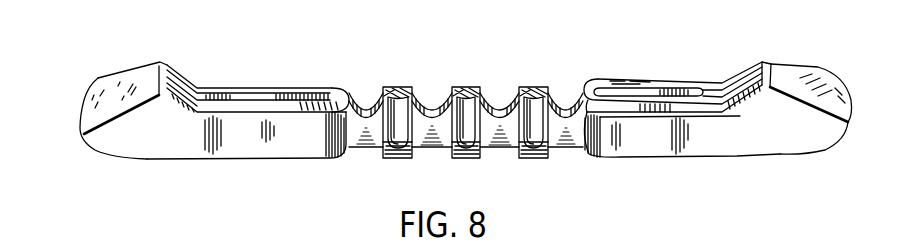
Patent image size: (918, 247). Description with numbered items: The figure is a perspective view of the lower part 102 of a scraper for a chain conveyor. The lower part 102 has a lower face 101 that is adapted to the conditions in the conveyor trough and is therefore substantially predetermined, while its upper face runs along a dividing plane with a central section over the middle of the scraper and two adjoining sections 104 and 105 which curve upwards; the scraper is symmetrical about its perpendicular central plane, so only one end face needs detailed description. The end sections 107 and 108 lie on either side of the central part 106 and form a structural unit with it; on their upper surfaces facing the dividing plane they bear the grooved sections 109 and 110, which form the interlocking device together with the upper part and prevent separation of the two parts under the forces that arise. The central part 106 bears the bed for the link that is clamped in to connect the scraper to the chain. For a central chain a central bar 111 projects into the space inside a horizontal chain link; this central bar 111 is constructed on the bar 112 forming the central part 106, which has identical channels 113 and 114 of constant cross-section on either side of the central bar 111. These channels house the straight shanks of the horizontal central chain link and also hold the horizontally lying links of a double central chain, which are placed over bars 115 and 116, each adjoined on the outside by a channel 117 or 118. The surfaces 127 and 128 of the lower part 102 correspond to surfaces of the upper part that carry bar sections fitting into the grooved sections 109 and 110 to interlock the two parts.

The lower face 101 is at (567, 150).
The lower part 102 is at (466, 104).
The adjoining section 104 is at (755, 108).
The adjoining section 105 is at (180, 108).
The central part 106 is at (469, 104).
The end section 107 is at (247, 137).
The end section 108 is at (610, 70).
The grooved section 109 is at (252, 98).
The grooved section 110 is at (698, 101).
The central bar 111 is at (475, 85).
The bar 112 is at (435, 132).
The channel 113 is at (498, 100).
The channel 114 is at (428, 103).
The bar 115 is at (394, 89).
The bar 116 is at (527, 88).
The channel 117 is at (352, 96).
The channel 118 is at (562, 102).
The surface 127 is at (283, 85).
The surface 128 is at (652, 83).